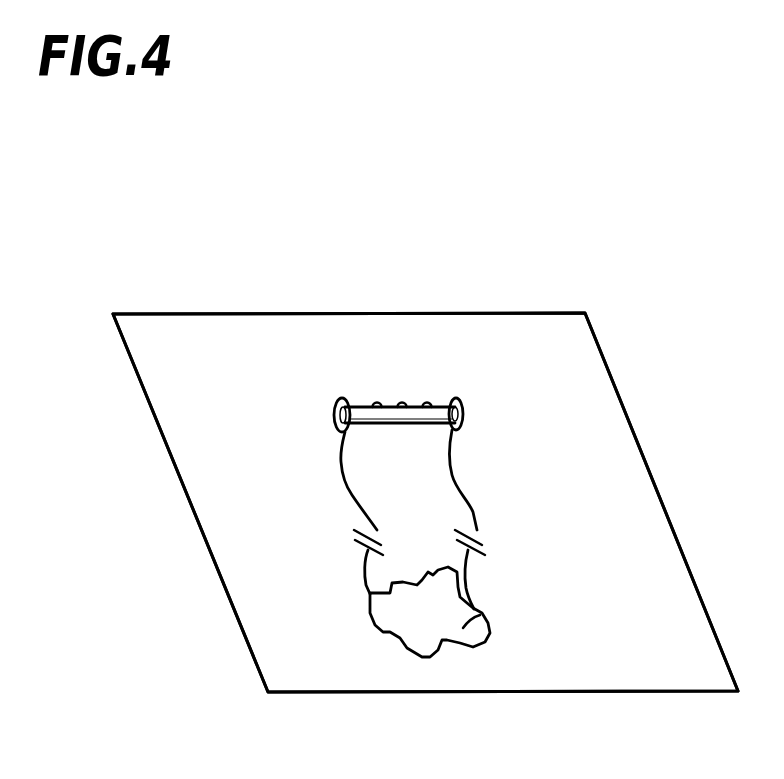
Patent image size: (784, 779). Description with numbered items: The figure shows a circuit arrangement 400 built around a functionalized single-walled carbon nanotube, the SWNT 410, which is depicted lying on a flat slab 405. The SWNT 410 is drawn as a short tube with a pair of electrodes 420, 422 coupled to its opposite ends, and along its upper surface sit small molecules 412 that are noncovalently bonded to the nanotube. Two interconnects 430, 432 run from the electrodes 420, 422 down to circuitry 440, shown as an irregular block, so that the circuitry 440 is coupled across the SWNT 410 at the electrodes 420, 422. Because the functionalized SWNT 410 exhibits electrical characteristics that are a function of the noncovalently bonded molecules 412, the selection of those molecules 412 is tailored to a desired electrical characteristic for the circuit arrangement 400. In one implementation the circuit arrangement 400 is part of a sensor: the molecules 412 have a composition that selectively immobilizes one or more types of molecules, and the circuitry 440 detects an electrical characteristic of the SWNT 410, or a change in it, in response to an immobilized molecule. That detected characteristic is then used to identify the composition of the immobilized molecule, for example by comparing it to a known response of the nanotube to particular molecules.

The circuit arrangement 400 is at (570, 228).
The substrate 405 is at (635, 523).
The functionalized SWNT 410 is at (441, 401).
The noncovalently bonded molecules 412 is at (368, 395).
The electrode 420 is at (334, 419).
The electrode 422 is at (466, 420).
The interconnect 430 is at (342, 483).
The interconnect 432 is at (460, 490).
The circuitry 440 is at (483, 615).